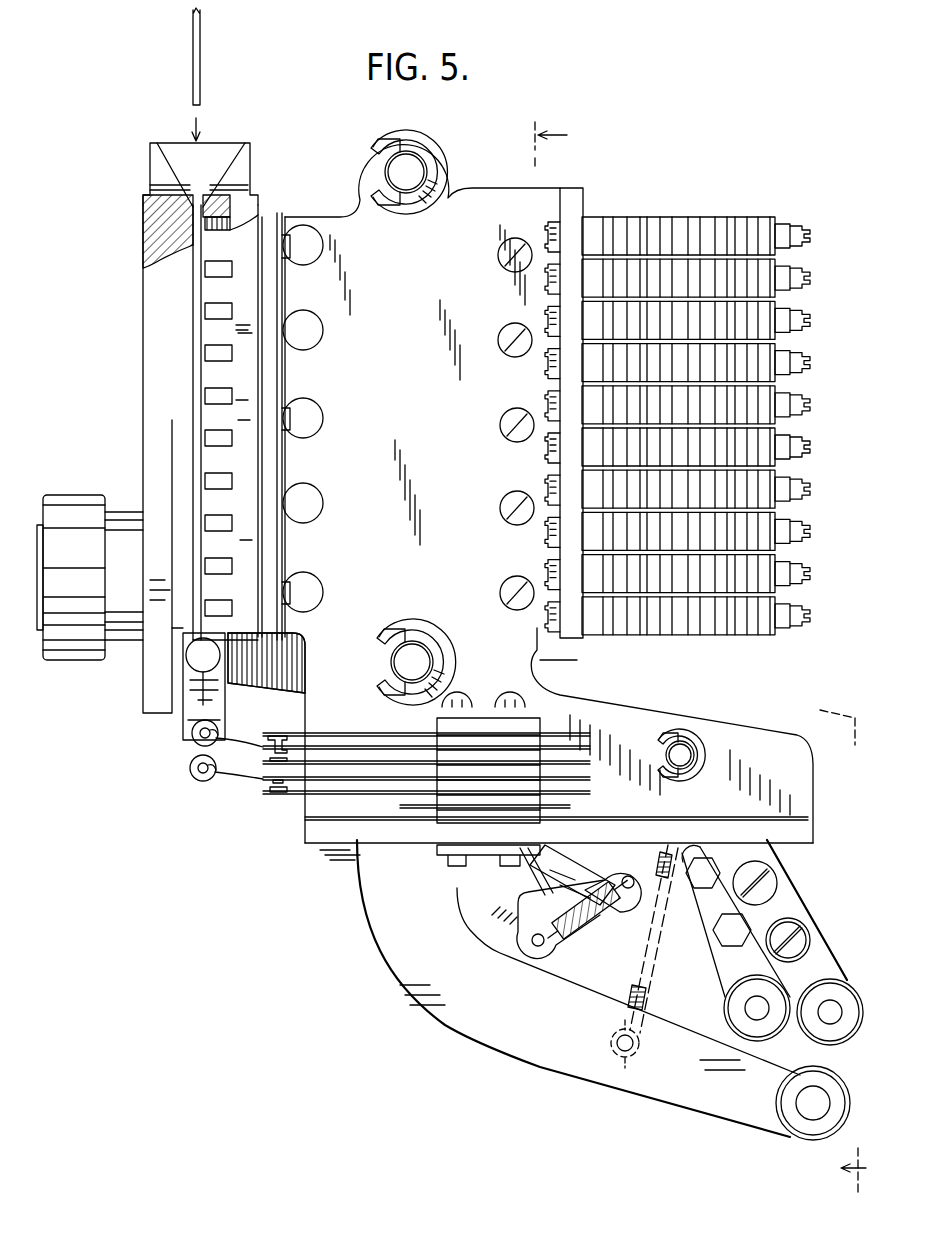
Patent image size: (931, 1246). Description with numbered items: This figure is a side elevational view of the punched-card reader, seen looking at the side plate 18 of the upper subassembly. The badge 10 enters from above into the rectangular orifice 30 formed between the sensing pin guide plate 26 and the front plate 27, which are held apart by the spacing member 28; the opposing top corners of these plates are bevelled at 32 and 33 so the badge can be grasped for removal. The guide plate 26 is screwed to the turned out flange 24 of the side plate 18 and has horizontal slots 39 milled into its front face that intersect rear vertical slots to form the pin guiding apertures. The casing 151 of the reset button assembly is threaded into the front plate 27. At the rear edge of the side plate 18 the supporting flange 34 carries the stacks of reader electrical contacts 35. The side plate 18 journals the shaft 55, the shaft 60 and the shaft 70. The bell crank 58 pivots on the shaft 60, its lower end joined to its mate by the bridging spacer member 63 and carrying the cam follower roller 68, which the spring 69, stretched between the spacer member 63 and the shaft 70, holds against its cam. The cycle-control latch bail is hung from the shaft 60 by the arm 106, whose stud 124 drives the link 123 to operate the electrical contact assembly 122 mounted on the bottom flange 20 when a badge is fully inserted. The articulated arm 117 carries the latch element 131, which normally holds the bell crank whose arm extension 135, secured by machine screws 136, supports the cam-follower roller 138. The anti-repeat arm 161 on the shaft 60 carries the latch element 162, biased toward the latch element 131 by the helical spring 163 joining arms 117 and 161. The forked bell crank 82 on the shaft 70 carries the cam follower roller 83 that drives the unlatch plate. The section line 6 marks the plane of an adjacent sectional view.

The badge 10 is at (201, 47).
The bevelled corner 33 is at (173, 148).
The bevelled corner 32 is at (225, 148).
The sensing pin guide plate 26 is at (245, 235).
The rectangular orifice 30 is at (190, 240).
The front plate 27 is at (156, 341).
The spacing member 28 is at (200, 470).
The horizontal slots 39 is at (218, 402).
The turned out flange 24 is at (275, 300).
The casing 151 is at (82, 505).
The stud 124 is at (195, 660).
The link 123 is at (190, 722).
The arm 106 is at (255, 680).
The side plate 18 is at (497, 190).
The shaft 55 is at (412, 158).
The shaft 60 is at (420, 645).
The shaft 70 is at (683, 742).
The supporting flange 34 is at (578, 207).
The reader electrical contacts 35 is at (712, 305).
The section line 6 is at (700, 657).
The electrical contact assembly 122 is at (340, 747).
The bottom flange 20 is at (327, 845).
The bell crank 58 is at (470, 1035).
The cam follower roller 68 is at (806, 1138).
The articulated arm 117 is at (605, 845).
The latch element 162 is at (518, 878).
The arm 161 is at (515, 932).
The helical spring 163 is at (573, 925).
The latch element 131 is at (582, 922).
The spring 69 is at (648, 972).
The bridging spacer member 63 is at (628, 1070).
The forked bell crank 82 is at (792, 906).
The arm extension 135 is at (727, 967).
The machine screws 136 is at (718, 930).
The cam-follower roller 138 is at (763, 1030).
The cam follower roller 83 is at (836, 1032).